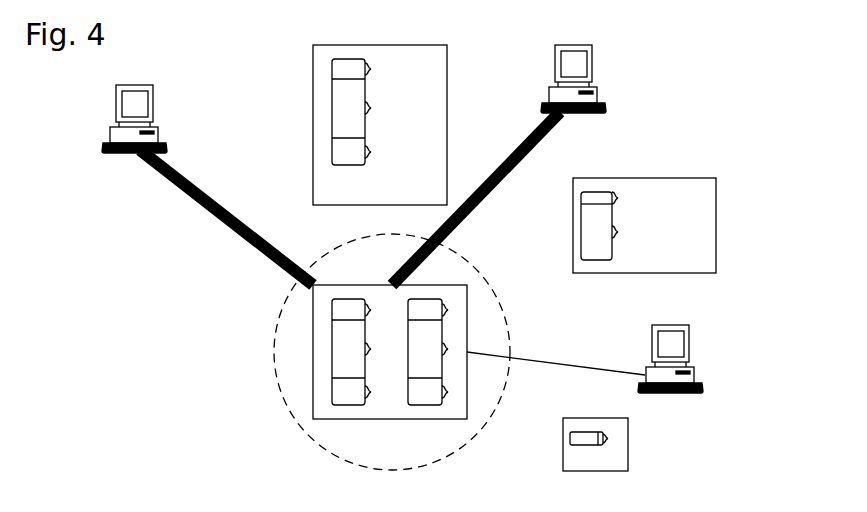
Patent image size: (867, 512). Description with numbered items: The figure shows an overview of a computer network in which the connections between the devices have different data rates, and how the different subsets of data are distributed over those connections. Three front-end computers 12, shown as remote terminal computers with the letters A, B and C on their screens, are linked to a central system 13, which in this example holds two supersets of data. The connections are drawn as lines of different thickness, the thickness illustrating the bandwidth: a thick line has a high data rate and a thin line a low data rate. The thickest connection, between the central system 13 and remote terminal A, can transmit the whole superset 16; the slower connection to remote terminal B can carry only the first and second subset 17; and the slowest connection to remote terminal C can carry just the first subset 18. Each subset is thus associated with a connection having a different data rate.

The front-end computer 12 is at (404, 219).
The central system 13 is at (392, 352).
The superset 16 is at (342, 130).
The first and second subset 17 is at (512, 168).
The first subset 18 is at (515, 358).